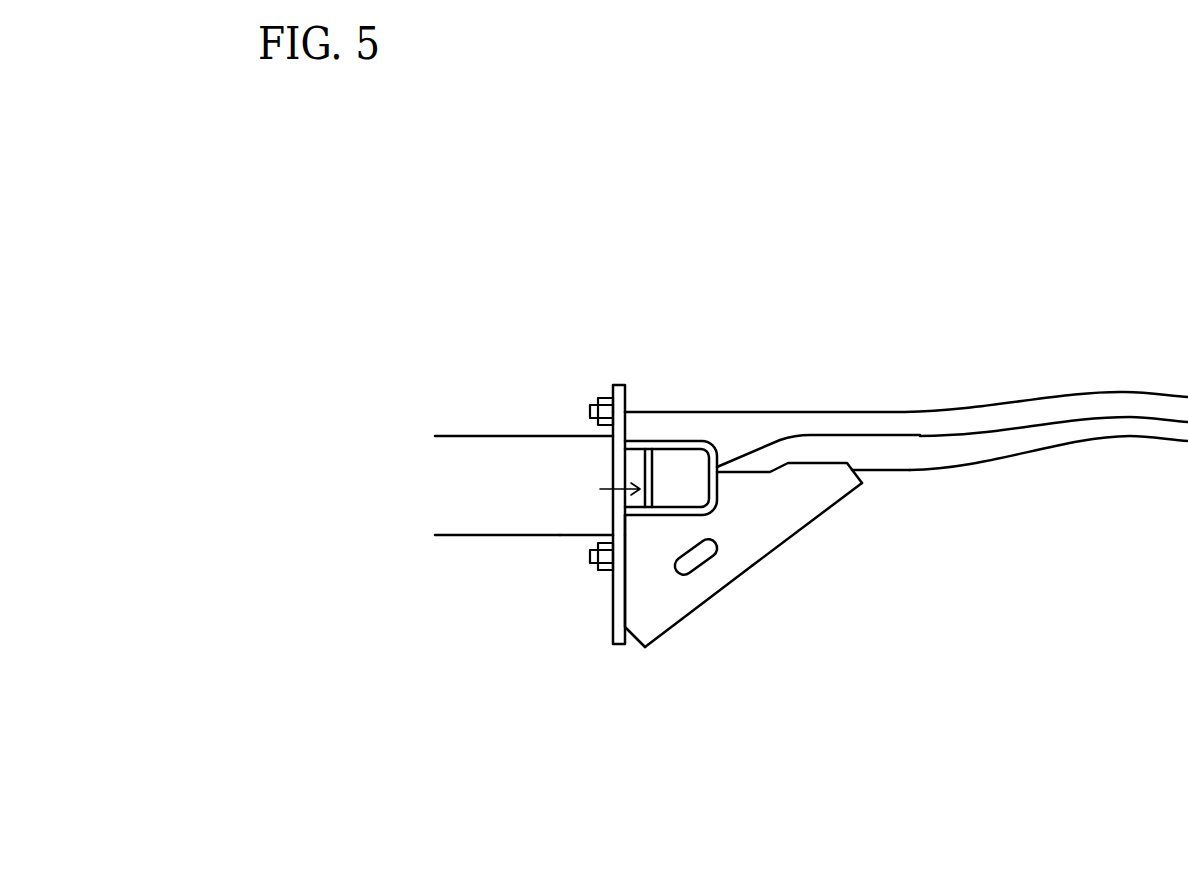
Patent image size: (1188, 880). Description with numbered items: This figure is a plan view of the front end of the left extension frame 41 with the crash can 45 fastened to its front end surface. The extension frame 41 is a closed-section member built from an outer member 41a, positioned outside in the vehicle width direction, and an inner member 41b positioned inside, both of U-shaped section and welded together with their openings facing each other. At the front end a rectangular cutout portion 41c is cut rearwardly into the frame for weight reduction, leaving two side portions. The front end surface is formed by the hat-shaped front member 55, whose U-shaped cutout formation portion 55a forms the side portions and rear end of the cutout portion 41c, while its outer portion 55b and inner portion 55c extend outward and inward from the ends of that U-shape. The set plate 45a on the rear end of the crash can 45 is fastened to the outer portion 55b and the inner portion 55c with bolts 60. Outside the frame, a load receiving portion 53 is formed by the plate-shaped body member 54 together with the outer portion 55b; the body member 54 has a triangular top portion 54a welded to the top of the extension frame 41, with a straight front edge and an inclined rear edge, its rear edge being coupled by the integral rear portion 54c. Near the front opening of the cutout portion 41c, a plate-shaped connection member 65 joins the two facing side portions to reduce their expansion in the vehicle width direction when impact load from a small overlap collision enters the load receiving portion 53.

The extension frame 41 is at (1175, 538).
The outer member 41a is at (1063, 430).
The inner member 41b is at (1132, 405).
The cutout portion 41c is at (600, 489).
The crash can 45 is at (462, 525).
The set plate 45a is at (607, 578).
The load receiving portion 53 is at (665, 647).
The body member 54 is at (777, 550).
The top portion 54a is at (680, 607).
The rear portion 54c is at (810, 523).
The front member 55 is at (612, 652).
The cutout formation portion 55a is at (680, 444).
The outer portion 55b is at (620, 610).
The inner portion 55c is at (625, 392).
The bolt 60 is at (597, 405).
The connection member 65 is at (643, 462).